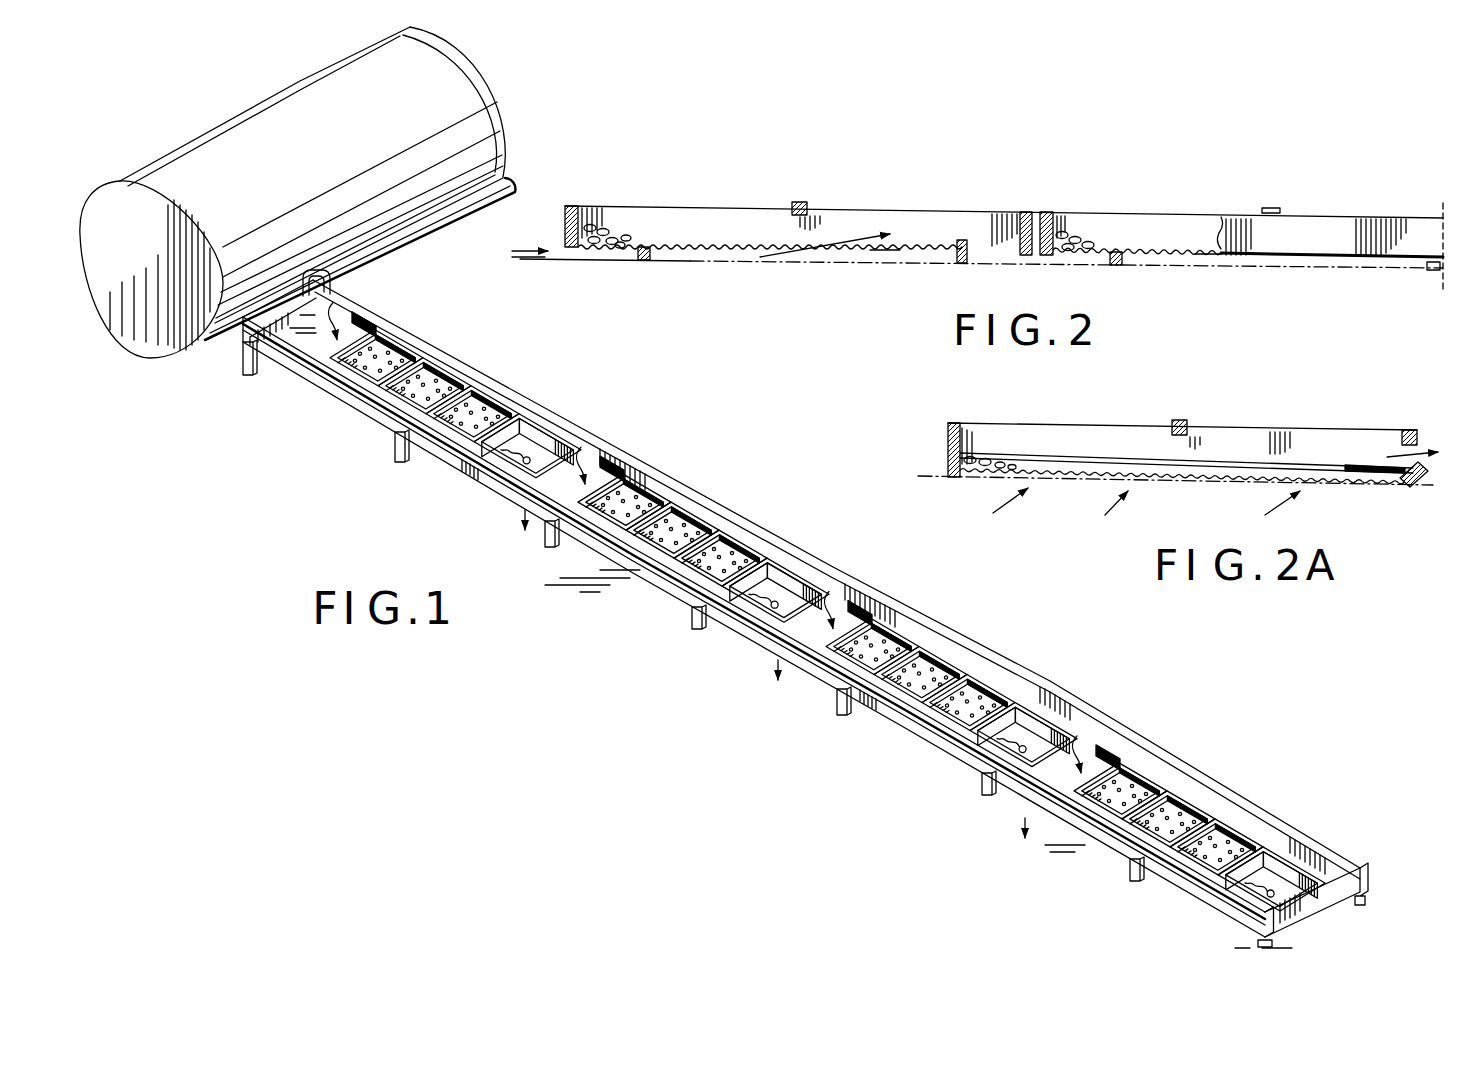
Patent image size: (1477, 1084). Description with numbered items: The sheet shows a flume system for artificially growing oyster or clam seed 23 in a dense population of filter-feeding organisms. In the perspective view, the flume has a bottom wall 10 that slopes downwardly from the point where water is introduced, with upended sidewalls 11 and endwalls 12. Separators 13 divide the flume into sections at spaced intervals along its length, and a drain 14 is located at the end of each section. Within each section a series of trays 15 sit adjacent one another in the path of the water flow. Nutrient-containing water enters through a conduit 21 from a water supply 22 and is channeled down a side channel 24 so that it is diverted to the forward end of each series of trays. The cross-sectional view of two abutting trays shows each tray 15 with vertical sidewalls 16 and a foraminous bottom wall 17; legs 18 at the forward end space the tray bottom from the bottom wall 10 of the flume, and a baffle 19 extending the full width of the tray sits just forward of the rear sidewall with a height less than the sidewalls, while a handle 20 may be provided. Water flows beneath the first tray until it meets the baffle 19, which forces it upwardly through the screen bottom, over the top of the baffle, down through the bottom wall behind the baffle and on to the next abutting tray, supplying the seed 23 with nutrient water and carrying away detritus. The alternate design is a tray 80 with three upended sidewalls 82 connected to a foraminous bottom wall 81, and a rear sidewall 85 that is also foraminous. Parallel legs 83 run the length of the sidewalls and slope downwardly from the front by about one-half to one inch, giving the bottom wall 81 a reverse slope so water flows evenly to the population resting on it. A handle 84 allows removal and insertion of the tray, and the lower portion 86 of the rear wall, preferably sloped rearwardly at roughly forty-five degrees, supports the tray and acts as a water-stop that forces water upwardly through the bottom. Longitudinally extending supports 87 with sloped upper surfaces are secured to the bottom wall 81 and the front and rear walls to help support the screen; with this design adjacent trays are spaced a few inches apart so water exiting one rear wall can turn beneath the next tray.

In FIG. 1, the bottom wall 10 is at (805, 614).
In FIG. 1, the sidewalls 11 is at (903, 595).
In FIG. 1, the endwalls 12 is at (283, 322).
In FIG. 1, the separators 13 is at (462, 376).
In FIG. 1, the drain 14 is at (522, 460).
In FIG. 1, the trays 15 is at (428, 360).
In FIG. 2, the trays 15 is at (863, 194).
In FIG. 2, the vertical sidewalls 16 is at (578, 206).
In FIG. 2, the foraminous bottom wall 17 is at (892, 263).
In FIG. 2, the legs 18 is at (648, 258).
In FIG. 2, the baffle 19 is at (962, 263).
In FIG. 2, the handle 20 is at (800, 202).
In FIG. 1, the conduit 21 is at (414, 248).
In FIG. 1, the water supply 22 is at (492, 85).
In FIG. 2, the oyster or clam seed 23 is at (613, 234).
In FIG. 1, the side channel 24 is at (832, 578).
In FIG. 2A, the tray 80 is at (1324, 386).
In FIG. 2A, the foraminous bottom wall 81 is at (1165, 483).
In FIG. 2A, the upended sidewalls 82 is at (958, 423).
In FIG. 2A, the legs 83 is at (985, 478).
In FIG. 2A, the handle 84 is at (1180, 420).
In FIG. 2A, the rear sidewall 85 is at (1412, 430).
In FIG. 2A, the lower portion of rear wall 86 is at (1412, 486).
In FIG. 2A, the longitudinally extending supports 87 is at (1092, 455).